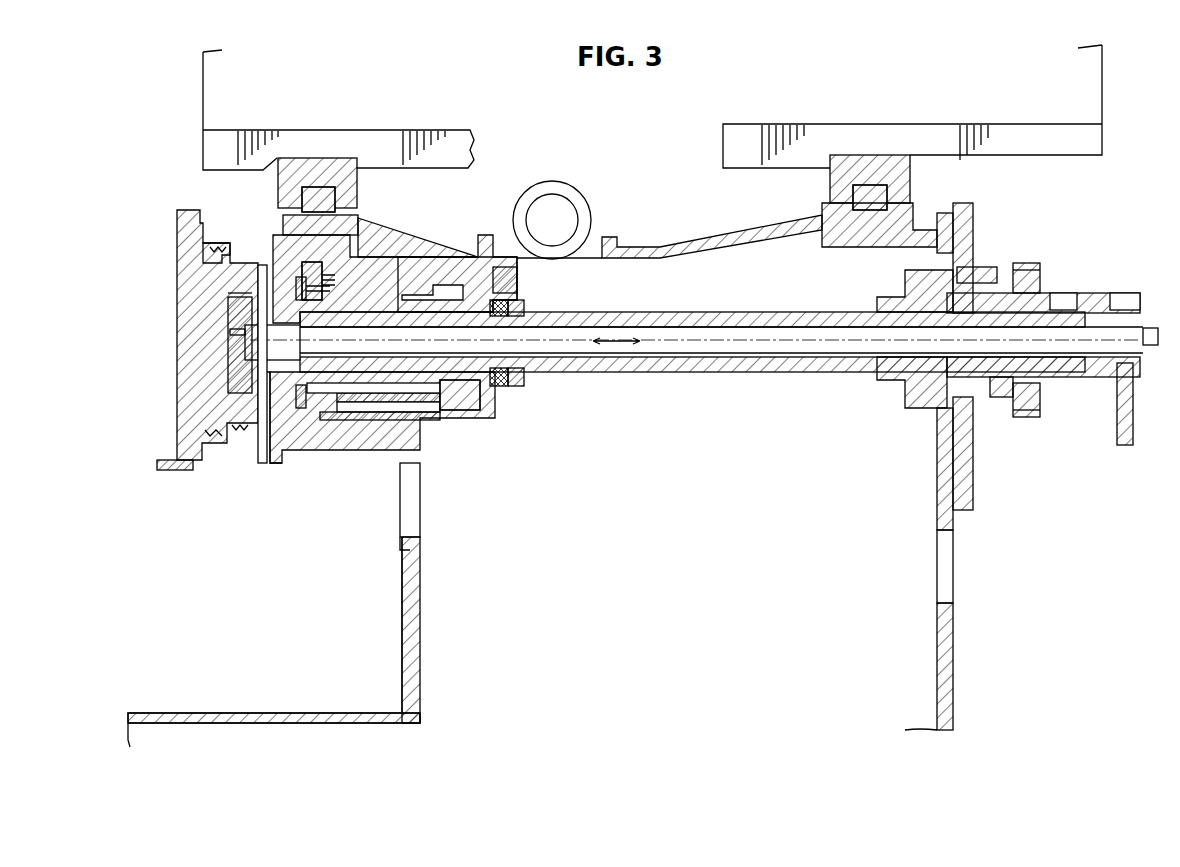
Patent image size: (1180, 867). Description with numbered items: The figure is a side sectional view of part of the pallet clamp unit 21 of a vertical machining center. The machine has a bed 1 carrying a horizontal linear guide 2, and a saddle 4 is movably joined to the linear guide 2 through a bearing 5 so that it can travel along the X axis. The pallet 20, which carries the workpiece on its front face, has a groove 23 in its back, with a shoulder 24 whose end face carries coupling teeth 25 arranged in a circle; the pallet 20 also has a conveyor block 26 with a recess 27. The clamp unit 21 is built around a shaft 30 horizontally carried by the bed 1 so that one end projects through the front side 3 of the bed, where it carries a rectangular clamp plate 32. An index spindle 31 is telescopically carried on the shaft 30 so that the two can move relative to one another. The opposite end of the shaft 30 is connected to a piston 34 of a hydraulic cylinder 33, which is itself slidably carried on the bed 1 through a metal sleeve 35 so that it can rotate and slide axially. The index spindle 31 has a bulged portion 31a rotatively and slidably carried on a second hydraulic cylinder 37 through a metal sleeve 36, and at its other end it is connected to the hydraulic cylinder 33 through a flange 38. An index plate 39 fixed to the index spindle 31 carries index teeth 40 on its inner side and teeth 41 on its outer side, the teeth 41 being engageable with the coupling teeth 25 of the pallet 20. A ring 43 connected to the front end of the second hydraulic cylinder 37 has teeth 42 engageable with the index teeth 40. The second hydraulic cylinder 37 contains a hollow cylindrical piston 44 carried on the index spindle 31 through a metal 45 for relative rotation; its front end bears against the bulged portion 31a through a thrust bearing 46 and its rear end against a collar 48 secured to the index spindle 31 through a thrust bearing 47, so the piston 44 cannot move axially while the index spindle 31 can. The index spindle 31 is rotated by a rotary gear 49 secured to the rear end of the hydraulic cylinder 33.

The bed 1 is at (662, 250).
The horizontal linear guide 2 is at (330, 198).
The front side 3 is at (410, 594).
The saddle 4 is at (418, 140).
The bearing 5 is at (338, 170).
The pallet 20 is at (192, 352).
The clamp unit 21 is at (287, 510).
The groove 23 is at (232, 294).
The shoulder 24 is at (235, 268).
The coupling teeth 25 is at (233, 262).
The conveyor block 26 is at (160, 458).
The recess 27 is at (173, 474).
The shaft 30 is at (650, 345).
The index spindle 31 is at (738, 364).
The bulged portion 31a is at (375, 375).
The clamp plate 32 is at (222, 305).
The hydraulic cylinder 33 is at (937, 388).
The piston 34 is at (1000, 392).
The metal sleeve 35 is at (975, 408).
The metal sleeve 36 is at (387, 293).
The second hydraulic cylinder 37 is at (447, 278).
The flange 38 is at (905, 290).
The index plate 39 is at (287, 450).
The index teeth 40 is at (335, 460).
The teeth 41 is at (263, 268).
The teeth 42 is at (350, 232).
The ring 43 is at (320, 275).
The hollow cylindrical piston 44 is at (500, 273).
The metal 45 is at (470, 382).
The thrust bearing 46 is at (417, 394).
The thrust bearing 47 is at (500, 385).
The collar 48 is at (520, 380).
The rotary gear 49 is at (1043, 272).